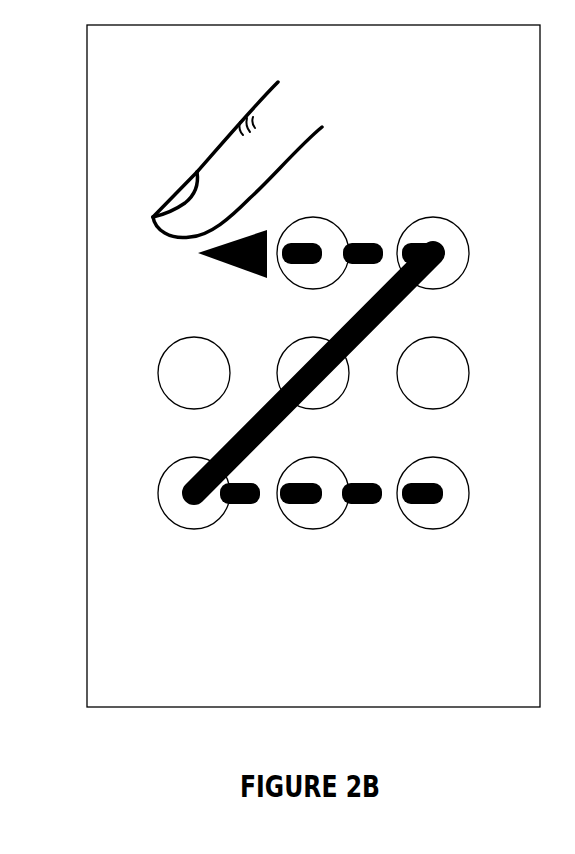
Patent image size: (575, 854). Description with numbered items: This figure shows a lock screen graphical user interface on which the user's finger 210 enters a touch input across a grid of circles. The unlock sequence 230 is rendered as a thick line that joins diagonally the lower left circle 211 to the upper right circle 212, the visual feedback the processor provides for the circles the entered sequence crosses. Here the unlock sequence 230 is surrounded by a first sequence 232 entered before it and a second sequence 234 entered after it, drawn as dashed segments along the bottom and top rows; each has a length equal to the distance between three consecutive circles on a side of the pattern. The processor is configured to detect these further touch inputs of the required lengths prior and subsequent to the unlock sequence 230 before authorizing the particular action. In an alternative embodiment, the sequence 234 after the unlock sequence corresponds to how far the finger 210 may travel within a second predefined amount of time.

The finger 210 is at (288, 110).
The lower left circle 211 is at (195, 515).
The upper right circle 212 is at (447, 275).
The unlock sequence 230 is at (223, 448).
The first sequence 232 is at (251, 503).
The second sequence 234 is at (372, 243).